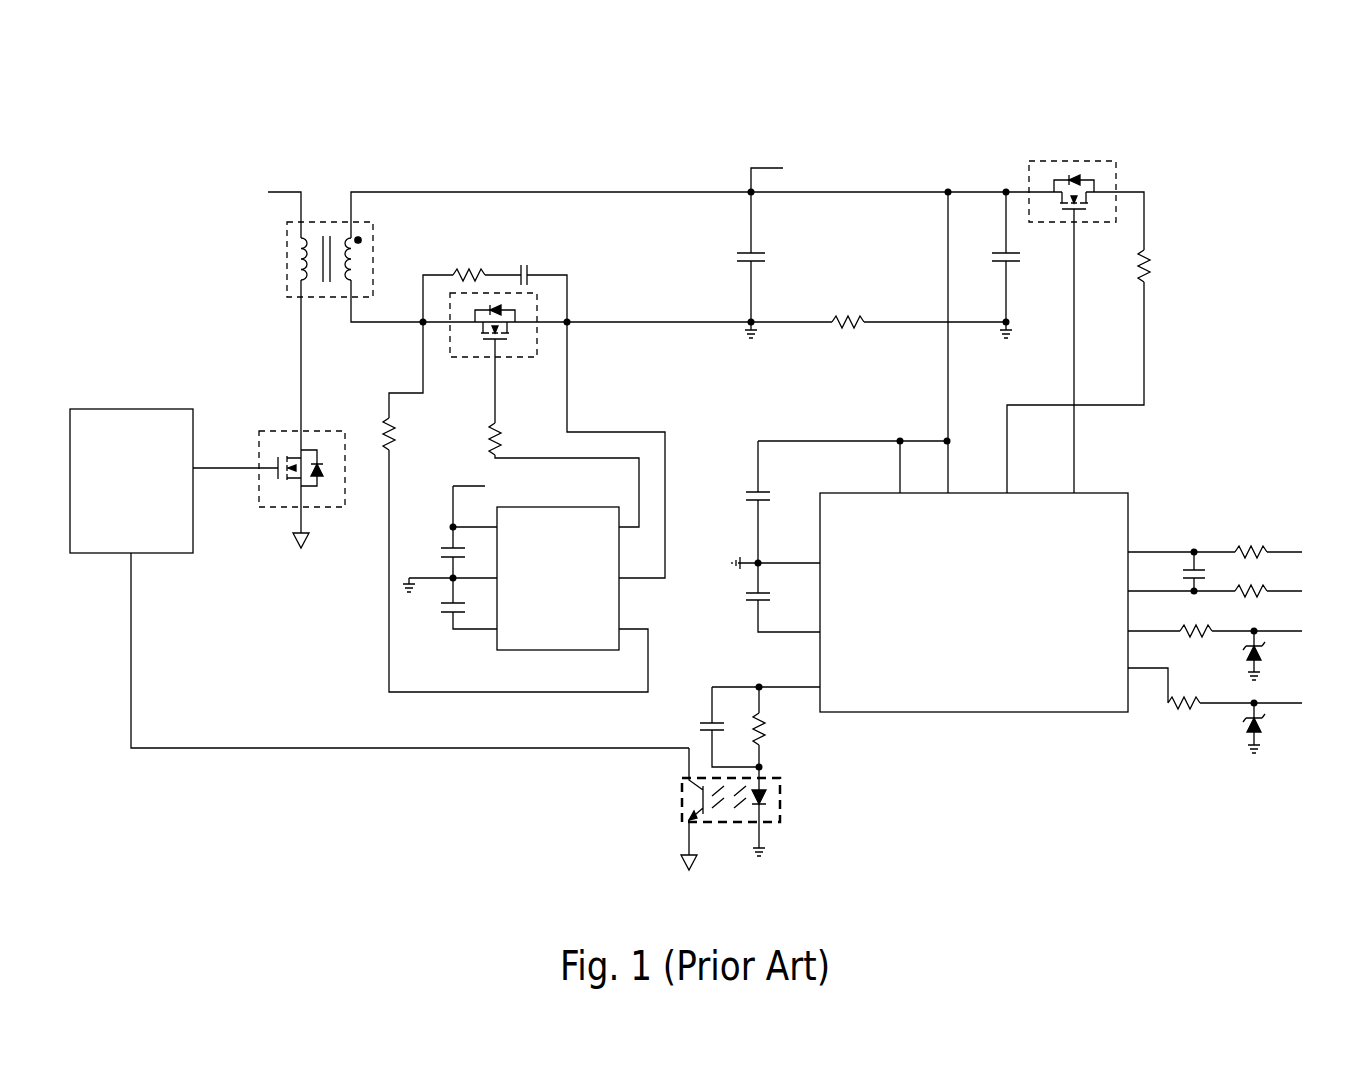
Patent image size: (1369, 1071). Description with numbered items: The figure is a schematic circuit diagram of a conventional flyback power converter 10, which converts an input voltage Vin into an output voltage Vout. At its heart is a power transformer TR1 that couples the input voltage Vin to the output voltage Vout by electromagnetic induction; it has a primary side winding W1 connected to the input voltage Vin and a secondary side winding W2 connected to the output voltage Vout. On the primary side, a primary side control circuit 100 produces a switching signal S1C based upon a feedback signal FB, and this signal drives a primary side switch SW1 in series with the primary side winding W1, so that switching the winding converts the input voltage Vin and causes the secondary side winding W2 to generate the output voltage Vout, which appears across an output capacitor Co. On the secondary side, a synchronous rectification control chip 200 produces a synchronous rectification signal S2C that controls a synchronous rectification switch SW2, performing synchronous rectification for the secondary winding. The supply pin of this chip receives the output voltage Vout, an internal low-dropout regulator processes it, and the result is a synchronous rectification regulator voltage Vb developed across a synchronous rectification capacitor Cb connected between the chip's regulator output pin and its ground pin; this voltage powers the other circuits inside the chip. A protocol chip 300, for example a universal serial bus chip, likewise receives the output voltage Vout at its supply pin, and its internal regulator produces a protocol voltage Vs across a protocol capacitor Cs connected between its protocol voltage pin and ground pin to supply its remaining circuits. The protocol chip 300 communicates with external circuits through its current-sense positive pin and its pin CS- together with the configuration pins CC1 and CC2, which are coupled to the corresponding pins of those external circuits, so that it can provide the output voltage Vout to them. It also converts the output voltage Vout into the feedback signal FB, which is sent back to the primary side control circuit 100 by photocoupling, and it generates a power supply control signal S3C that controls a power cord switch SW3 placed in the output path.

The conventional flyback power converter 10 is at (98, 100).
The primary side control circuit 100 is at (153, 491).
The synchronous rectification control chip 200 is at (614, 640).
The protocol chip 300 is at (1004, 630).
The power transformer TR1 is at (334, 256).
The primary side winding W1 is at (275, 259).
The secondary side winding W2 is at (381, 259).
The primary side switch SW1 is at (259, 495).
The synchronous rectification switch SW2 is at (537, 335).
The power cord switch SW3 is at (1072, 161).
The switching signal S1C is at (235, 454).
The synchronous rectification signal S2C is at (541, 437).
The power supply control signal S3C is at (1048, 355).
The input voltage Vin is at (262, 208).
The output voltage Vout is at (752, 327).
The output capacitor Co is at (769, 265).
The synchronous rectification capacitor Cb is at (439, 616).
The synchronous rectification regulator voltage Vb is at (481, 604).
The protocol capacitor Cs is at (745, 614).
The protocol voltage Vs is at (786, 597).
The feedback signal FB is at (410, 650).
The pin CS- is at (1241, 592).
The pin CC1 is at (1245, 649).
The pin CC2 is at (1245, 705).